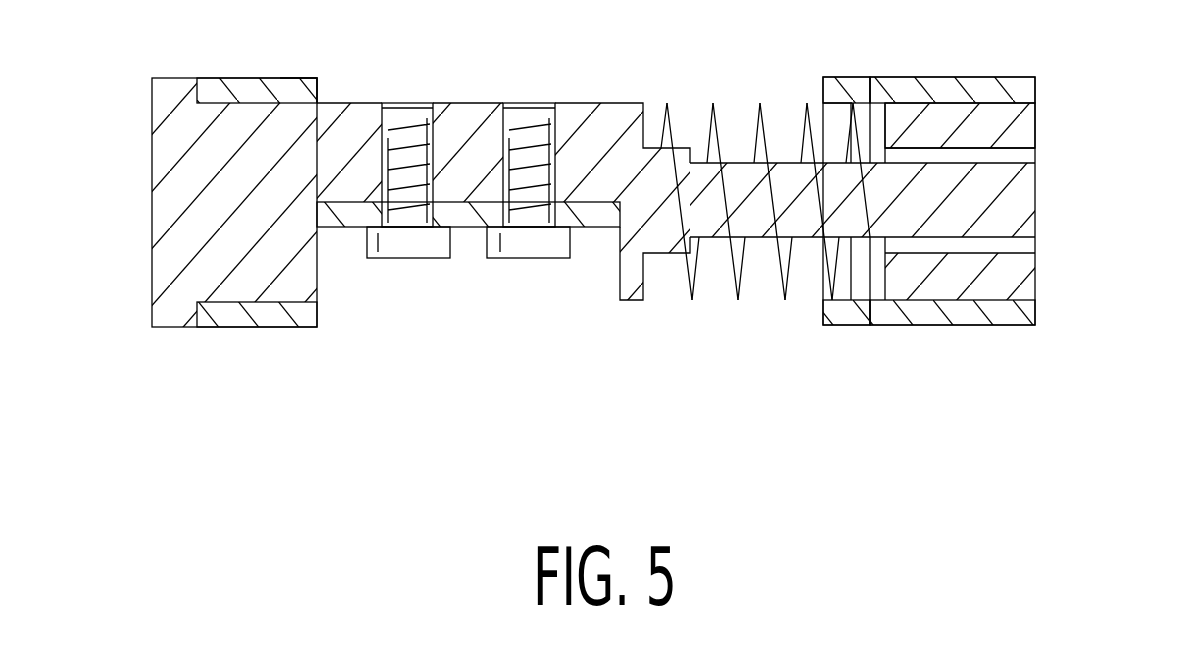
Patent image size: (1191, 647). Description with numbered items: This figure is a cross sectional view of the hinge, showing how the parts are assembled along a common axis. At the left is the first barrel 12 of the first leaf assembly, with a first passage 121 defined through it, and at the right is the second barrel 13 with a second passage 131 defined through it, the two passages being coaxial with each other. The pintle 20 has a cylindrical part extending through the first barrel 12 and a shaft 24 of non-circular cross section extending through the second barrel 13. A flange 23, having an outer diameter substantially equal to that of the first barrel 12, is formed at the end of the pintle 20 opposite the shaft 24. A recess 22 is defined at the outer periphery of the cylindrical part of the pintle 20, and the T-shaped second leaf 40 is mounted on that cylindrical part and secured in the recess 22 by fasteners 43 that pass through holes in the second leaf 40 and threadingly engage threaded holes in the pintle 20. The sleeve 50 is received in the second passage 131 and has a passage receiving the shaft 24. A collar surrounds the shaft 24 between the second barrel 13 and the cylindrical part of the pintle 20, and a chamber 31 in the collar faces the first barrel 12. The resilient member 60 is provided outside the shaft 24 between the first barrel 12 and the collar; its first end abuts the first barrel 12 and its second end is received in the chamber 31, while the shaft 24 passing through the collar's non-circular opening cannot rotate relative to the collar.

The first barrel 12 is at (247, 83).
The first passage 121 is at (313, 97).
The second barrel 13 is at (947, 85).
The second passage 131 is at (1022, 100).
The pintle 20 is at (262, 283).
The recess 22 is at (593, 203).
The flange 23 is at (163, 107).
The shaft 24 is at (1020, 227).
The chamber 31 is at (847, 297).
The second leaf 40 is at (358, 220).
The fastener 43 is at (397, 252).
The sleeve 50 is at (1020, 135).
The resilient member 60 is at (782, 288).